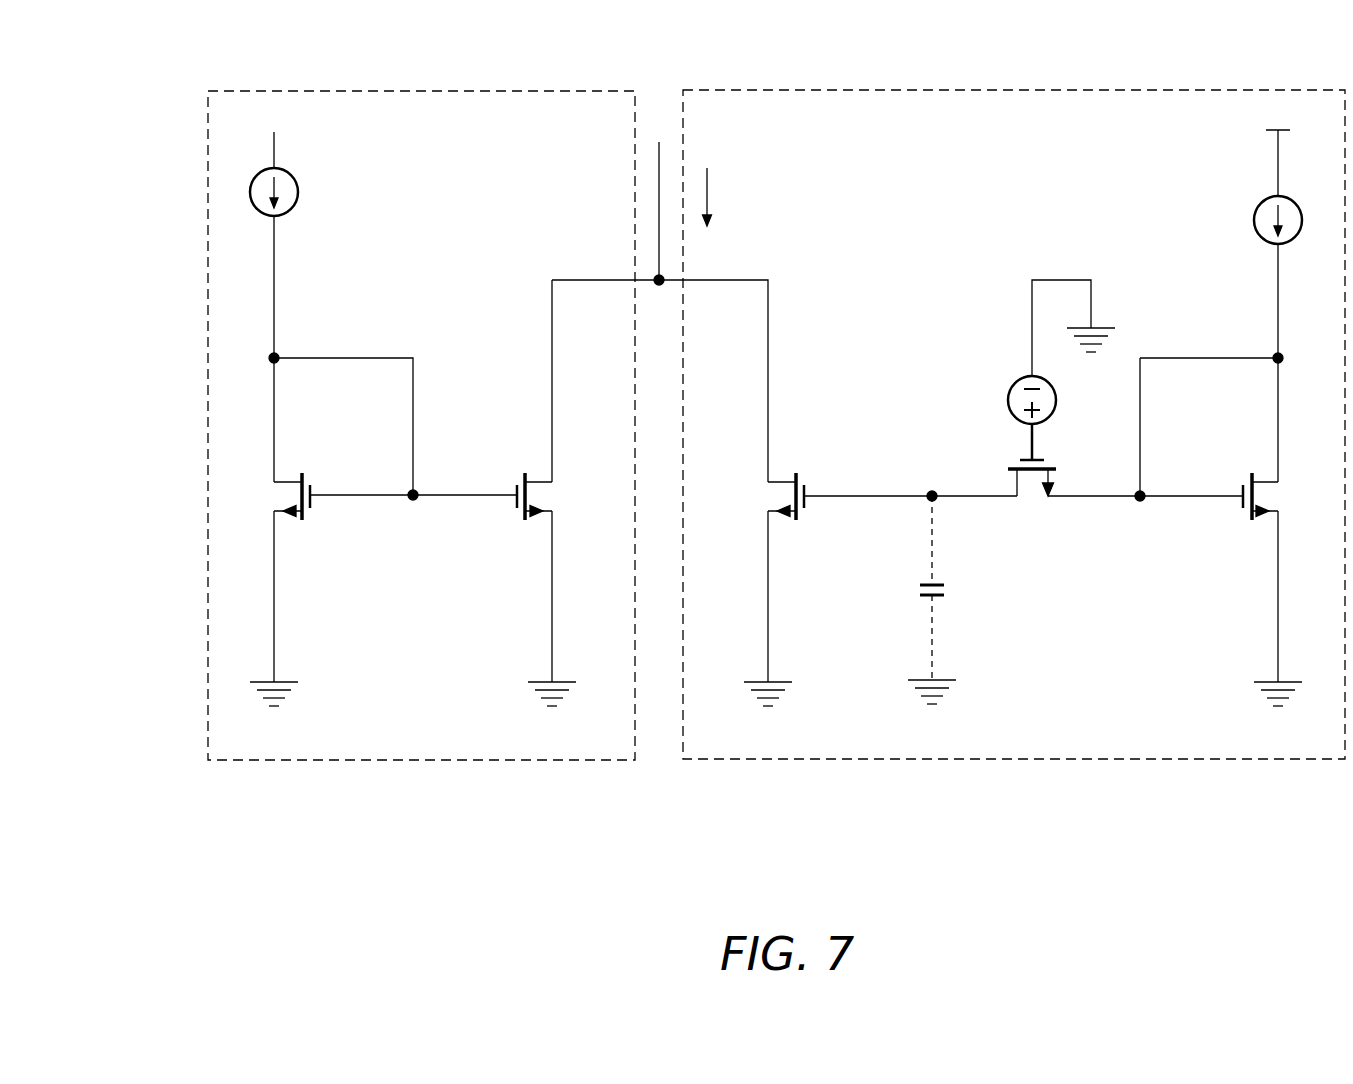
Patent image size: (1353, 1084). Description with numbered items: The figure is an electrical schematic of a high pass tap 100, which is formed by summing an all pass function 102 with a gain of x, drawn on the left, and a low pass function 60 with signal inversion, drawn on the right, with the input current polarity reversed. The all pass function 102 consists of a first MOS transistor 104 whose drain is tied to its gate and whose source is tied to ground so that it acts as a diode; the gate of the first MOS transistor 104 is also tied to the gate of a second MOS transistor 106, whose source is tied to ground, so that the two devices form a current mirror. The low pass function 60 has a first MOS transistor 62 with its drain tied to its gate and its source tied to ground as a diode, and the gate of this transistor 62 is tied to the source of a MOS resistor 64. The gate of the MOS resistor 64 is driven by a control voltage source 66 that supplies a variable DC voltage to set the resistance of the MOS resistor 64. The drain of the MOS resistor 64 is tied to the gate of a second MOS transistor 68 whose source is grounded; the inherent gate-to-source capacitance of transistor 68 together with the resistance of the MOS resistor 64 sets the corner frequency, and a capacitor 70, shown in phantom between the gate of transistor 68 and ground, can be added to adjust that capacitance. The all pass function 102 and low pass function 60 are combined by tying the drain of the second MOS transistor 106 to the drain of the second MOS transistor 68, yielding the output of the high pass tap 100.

The high pass tap 100 is at (186, 798).
The all pass function 102 is at (432, 760).
The first MOS transistor 104 is at (316, 500).
The second MOS transistor 106 is at (514, 500).
The low pass function 60 is at (823, 760).
The first MOS transistor 62 is at (1240, 500).
The MOS resistor 64 is at (1015, 483).
The control voltage source 66 is at (1010, 405).
The second MOS transistor 68 is at (808, 503).
The capacitor 70 is at (945, 590).